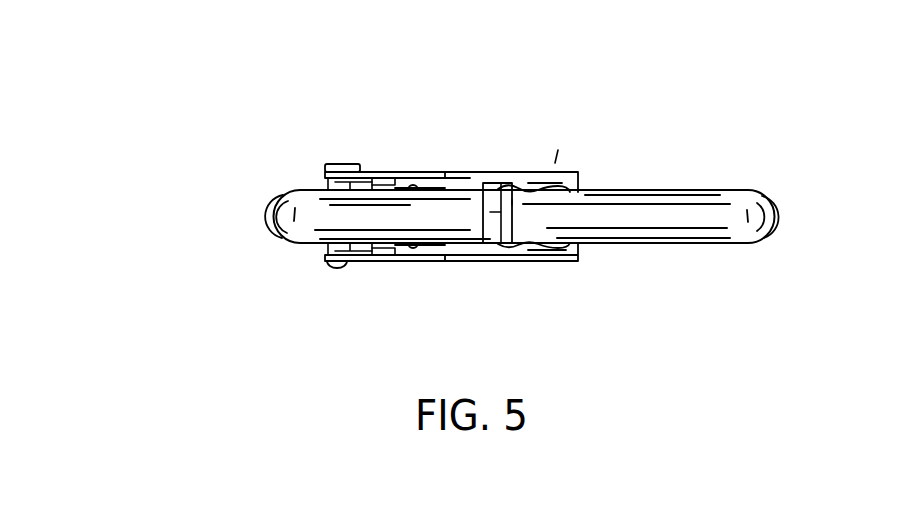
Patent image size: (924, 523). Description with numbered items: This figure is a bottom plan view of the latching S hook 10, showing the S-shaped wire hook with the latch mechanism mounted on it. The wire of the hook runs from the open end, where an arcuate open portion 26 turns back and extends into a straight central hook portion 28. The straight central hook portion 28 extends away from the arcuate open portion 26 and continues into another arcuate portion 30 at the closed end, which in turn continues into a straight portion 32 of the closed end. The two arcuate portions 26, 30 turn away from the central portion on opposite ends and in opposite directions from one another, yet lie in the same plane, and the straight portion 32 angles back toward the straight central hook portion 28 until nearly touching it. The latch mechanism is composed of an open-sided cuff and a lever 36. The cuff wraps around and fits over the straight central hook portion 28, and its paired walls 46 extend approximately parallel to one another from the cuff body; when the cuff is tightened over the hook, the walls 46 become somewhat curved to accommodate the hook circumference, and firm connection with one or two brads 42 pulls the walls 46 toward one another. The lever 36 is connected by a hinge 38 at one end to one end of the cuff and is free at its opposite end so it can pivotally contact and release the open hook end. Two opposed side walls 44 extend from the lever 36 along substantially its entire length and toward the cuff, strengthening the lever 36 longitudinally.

The latching S hook 10 is at (295, 125).
The arcuate open portion 26 is at (763, 197).
The straight central hook portion 28 is at (578, 217).
The arcuate portion 30 is at (307, 222).
The straight portion 32 is at (417, 213).
The lever 36 is at (552, 176).
The hinge 38 is at (347, 165).
The brads 42 is at (414, 185).
The side walls 44 is at (497, 258).
The paired walls 46 is at (473, 180).